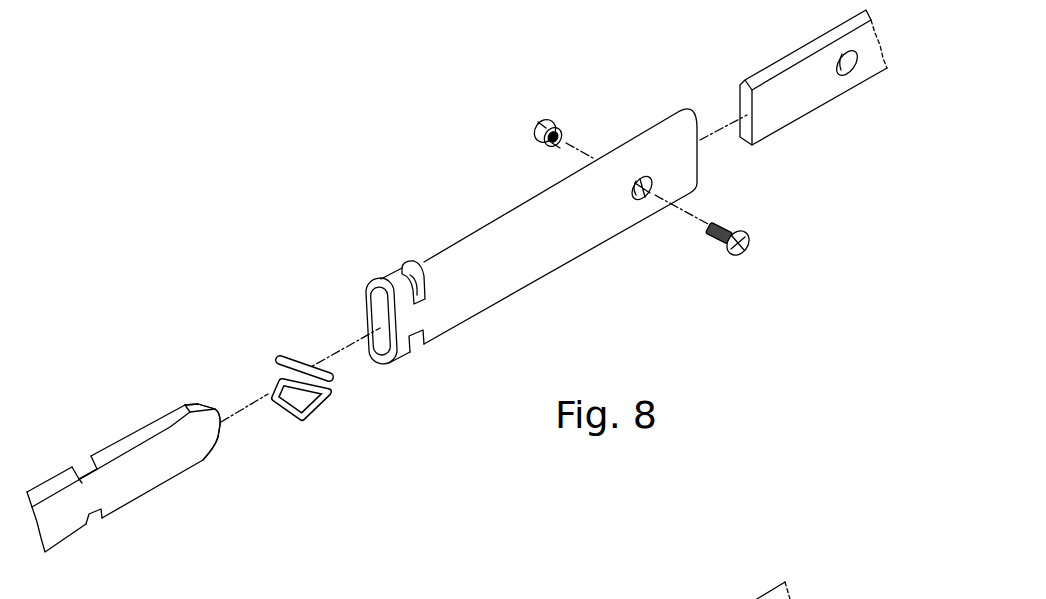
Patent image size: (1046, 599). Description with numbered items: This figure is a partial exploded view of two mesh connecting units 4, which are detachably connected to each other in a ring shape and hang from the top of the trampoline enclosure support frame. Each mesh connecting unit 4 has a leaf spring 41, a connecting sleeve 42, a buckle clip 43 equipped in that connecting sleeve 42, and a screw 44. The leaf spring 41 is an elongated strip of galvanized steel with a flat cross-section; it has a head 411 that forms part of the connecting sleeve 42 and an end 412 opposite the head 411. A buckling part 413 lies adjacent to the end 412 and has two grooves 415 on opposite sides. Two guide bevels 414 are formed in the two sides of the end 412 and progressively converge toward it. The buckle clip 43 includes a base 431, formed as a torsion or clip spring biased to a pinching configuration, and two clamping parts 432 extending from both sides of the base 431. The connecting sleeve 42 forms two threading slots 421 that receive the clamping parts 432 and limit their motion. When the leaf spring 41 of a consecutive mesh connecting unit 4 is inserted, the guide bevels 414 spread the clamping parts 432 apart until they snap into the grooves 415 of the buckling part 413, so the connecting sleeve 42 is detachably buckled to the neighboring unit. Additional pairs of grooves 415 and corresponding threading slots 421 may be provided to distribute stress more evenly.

The mesh connecting unit 4 is at (636, 112).
The leaf spring 41 is at (33, 492).
The head 411 is at (745, 141).
The end 412 is at (226, 432).
The buckling part 413 is at (88, 474).
The guide bevels 414 is at (199, 403).
The grooves 415 is at (83, 468).
The connecting sleeve 42 is at (469, 232).
The threading slots 421 is at (410, 265).
The buckle clip 43 is at (323, 398).
The base 431 is at (304, 358).
The clamping parts 432 is at (272, 366).
The screw 44 is at (734, 258).